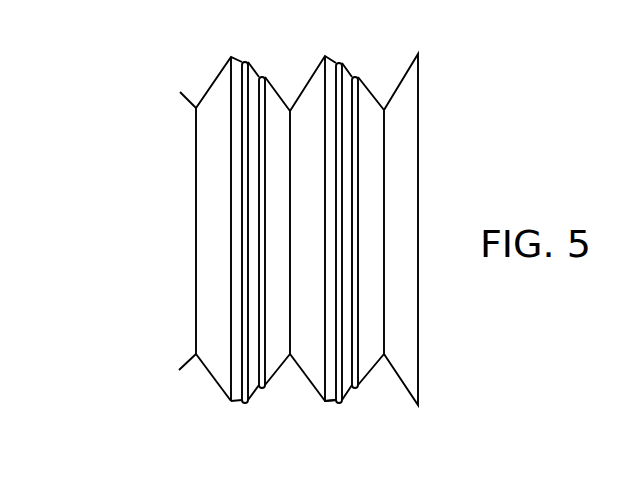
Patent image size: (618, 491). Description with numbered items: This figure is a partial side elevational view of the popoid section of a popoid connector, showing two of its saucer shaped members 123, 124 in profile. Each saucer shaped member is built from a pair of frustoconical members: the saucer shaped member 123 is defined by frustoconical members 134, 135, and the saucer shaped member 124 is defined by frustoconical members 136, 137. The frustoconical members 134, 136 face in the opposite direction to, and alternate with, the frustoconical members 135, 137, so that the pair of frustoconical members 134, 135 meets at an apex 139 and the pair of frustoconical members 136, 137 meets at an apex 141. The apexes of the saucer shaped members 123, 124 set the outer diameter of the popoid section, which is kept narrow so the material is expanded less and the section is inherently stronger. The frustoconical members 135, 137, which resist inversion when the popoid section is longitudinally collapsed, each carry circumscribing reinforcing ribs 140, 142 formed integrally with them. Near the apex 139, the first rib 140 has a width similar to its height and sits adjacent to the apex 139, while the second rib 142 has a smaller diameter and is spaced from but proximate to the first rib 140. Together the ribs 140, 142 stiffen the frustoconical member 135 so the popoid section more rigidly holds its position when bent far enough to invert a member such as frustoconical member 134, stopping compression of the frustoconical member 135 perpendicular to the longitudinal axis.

The saucer shaped member 123 is at (212, 84).
The saucer shaped member 124 is at (327, 56).
The frustoconical member 134 is at (203, 372).
The frustoconical member 135 is at (277, 94).
The frustoconical member 136 is at (305, 376).
The frustoconical member 137 is at (368, 93).
The apex 139 is at (229, 403).
The reinforcing rib 140 is at (243, 402).
The apex 141 is at (327, 405).
The reinforcing rib 142 is at (262, 77).